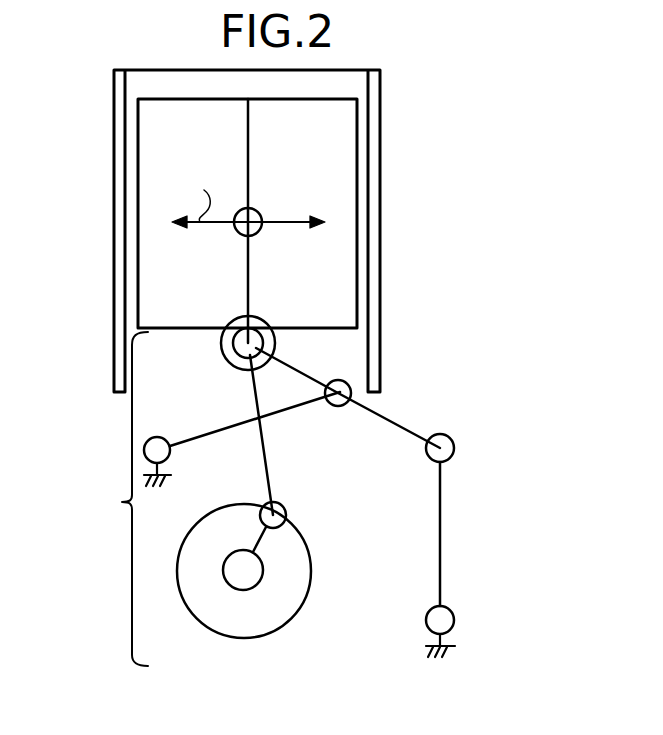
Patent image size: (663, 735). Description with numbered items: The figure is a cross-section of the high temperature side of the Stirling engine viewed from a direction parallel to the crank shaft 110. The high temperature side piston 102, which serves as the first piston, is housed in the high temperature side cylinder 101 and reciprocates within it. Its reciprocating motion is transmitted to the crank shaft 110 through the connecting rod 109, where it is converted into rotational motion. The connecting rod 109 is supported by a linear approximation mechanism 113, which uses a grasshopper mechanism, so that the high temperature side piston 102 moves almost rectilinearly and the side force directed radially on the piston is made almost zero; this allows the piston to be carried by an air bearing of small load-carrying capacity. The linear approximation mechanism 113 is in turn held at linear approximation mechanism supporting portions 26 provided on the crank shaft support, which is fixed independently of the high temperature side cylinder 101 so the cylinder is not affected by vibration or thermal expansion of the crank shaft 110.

The high temperature side cylinder 101 is at (375, 372).
The high temperature side piston 102 is at (360, 192).
The connecting rod 109 is at (268, 464).
The crank shaft 110 is at (245, 582).
The linear approximation mechanism 113 is at (264, 499).
The linear approximation mechanism supporting portion 26 is at (163, 481).